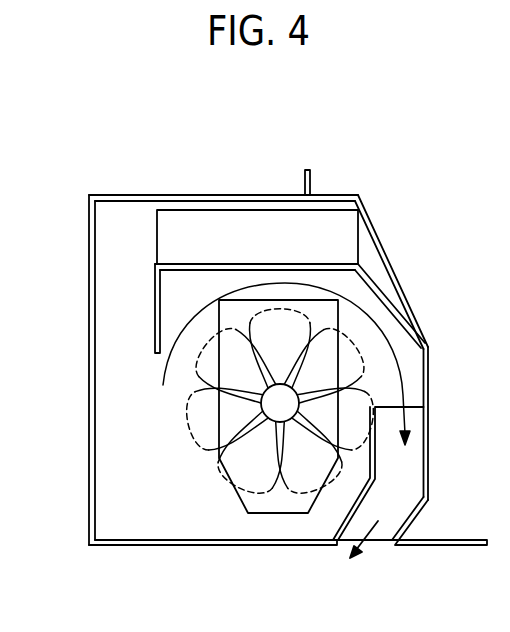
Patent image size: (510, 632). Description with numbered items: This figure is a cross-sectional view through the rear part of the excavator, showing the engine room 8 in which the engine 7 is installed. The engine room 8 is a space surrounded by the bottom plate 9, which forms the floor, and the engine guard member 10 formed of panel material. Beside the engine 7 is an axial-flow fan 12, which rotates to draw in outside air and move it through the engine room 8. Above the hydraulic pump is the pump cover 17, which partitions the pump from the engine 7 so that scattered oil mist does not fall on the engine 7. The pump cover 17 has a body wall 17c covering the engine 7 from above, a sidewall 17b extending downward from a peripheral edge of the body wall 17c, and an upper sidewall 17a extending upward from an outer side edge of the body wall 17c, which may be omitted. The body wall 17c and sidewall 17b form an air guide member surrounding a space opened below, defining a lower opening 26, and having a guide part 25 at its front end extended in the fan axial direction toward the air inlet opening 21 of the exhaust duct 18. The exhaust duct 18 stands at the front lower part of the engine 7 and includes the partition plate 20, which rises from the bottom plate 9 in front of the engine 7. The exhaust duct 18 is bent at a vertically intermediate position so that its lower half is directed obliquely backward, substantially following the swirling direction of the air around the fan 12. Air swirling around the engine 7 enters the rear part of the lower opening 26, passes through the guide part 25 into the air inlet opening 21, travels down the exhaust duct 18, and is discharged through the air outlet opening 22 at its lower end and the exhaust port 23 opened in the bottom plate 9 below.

The engine 7 is at (270, 514).
The engine room 8 is at (112, 387).
The bottom plate 9 is at (208, 545).
The engine guard member 10 is at (185, 195).
The fan 12 is at (195, 434).
The pump cover 17 is at (360, 259).
The upper sidewall 17a is at (252, 218).
The sidewall 17b is at (157, 307).
The body wall 17c is at (310, 263).
The exhaust duct 18 is at (429, 440).
The partition plate 20 is at (402, 289).
The air inlet opening 21 is at (407, 412).
The air outlet opening 22 is at (382, 545).
The exhaust port 23 is at (340, 548).
The guide part 25 is at (428, 368).
The lower opening 26 is at (163, 388).